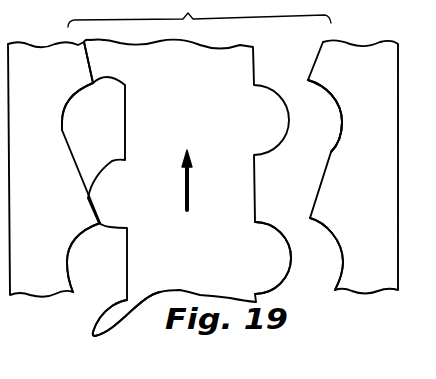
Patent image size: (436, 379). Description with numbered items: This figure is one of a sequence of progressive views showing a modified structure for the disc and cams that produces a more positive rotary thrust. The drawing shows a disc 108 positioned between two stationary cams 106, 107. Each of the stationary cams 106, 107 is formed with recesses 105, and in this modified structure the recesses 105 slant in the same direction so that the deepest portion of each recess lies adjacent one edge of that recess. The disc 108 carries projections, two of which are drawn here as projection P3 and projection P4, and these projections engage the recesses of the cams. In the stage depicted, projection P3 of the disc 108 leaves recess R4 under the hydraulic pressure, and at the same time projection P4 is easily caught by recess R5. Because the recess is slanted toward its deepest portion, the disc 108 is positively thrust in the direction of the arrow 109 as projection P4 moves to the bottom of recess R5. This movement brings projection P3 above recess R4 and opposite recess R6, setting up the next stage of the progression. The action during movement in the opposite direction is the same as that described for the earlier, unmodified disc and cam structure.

The recess 105 is at (64, 133).
The stationary cam 106 is at (56, 50).
The stationary cam 107 is at (342, 55).
The disc 108 is at (180, 57).
The arrow 109 is at (190, 178).
The recess R4 is at (336, 247).
The recess R5 is at (70, 254).
The recess R6 is at (340, 108).
The projection P3 is at (287, 238).
The projection P4 is at (100, 314).